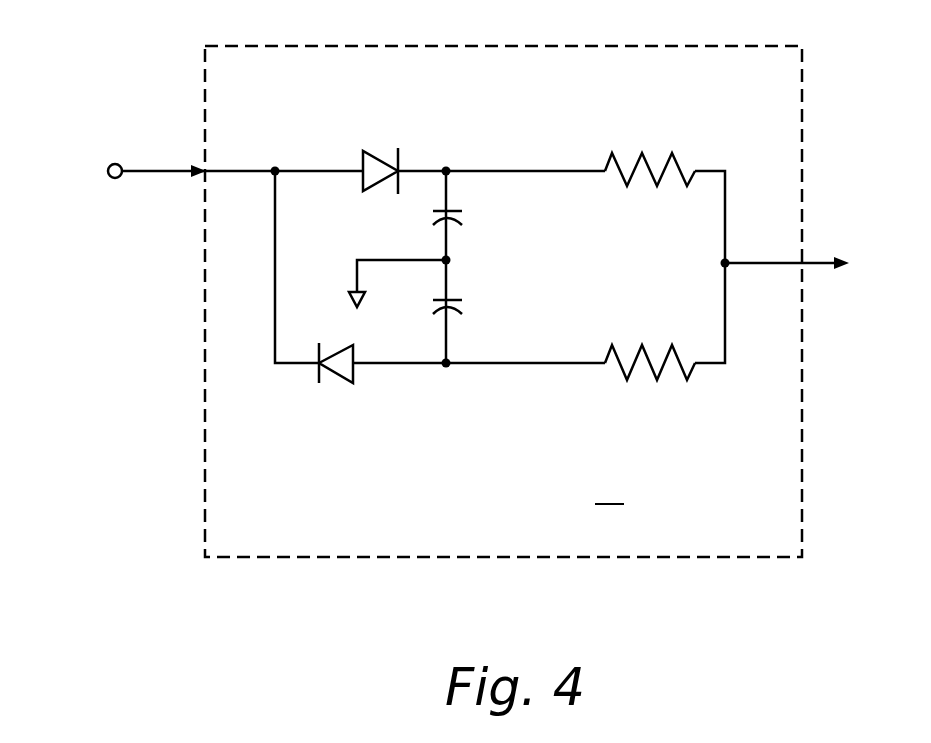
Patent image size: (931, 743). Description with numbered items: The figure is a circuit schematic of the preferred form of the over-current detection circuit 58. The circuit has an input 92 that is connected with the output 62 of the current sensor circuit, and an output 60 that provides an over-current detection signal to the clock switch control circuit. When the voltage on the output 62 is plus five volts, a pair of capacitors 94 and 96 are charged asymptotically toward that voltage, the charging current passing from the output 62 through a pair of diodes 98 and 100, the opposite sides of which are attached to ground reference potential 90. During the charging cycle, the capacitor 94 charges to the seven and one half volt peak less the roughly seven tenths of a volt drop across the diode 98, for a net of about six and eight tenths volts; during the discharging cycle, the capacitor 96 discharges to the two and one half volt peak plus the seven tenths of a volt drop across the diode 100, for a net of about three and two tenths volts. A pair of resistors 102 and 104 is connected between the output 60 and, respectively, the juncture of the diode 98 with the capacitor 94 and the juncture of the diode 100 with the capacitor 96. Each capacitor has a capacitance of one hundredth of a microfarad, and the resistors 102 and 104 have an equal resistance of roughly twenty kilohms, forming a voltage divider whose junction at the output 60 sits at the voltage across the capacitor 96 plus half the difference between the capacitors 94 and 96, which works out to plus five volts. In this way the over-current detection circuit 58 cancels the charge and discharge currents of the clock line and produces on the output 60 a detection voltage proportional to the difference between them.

The over-current detection circuit 58 is at (770, 157).
The output 60 is at (802, 262).
The output of the current sensor circuit 62 is at (108, 170).
The ground reference potential 90 is at (353, 297).
The input 92 is at (163, 170).
The capacitor 94 is at (462, 216).
The capacitor 96 is at (462, 304).
The diode 98 is at (376, 158).
The diode 100 is at (343, 380).
The resistor 102 is at (642, 158).
The resistor 104 is at (661, 376).